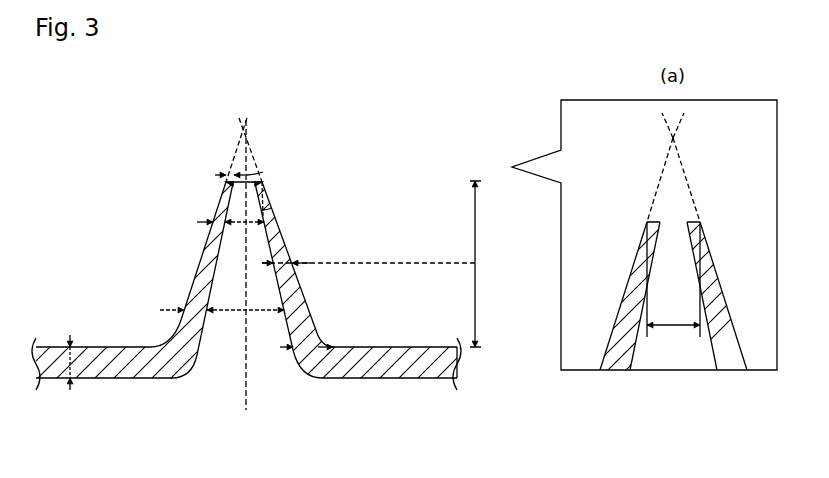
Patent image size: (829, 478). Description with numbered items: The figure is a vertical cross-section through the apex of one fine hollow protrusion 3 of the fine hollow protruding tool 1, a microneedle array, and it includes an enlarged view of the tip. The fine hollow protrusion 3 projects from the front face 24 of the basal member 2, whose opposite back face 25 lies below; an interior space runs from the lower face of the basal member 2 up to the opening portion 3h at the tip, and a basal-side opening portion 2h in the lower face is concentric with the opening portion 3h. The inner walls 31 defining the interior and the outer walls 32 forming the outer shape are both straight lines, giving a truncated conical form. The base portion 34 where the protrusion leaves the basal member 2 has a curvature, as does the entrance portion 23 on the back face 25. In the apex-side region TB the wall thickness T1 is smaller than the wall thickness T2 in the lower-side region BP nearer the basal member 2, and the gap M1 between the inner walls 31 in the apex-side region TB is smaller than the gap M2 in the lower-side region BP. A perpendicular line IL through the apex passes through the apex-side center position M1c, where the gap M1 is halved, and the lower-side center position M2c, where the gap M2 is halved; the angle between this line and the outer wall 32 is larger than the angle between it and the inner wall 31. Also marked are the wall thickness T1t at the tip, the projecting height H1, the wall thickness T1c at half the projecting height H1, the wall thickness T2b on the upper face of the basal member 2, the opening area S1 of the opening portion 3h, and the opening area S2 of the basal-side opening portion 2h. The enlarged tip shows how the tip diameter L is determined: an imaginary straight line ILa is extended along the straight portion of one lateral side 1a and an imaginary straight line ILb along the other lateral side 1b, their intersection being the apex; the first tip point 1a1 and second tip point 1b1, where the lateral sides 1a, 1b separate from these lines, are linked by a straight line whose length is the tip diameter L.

The fine hollow protruding tool 1 is at (373, 118).
The basal member 2 is at (50, 337).
The fine hollow protrusion 3 is at (189, 267).
The basal-side opening portion 2h is at (232, 358).
The opening portion 3h is at (250, 167).
The entrance portion 23 is at (176, 384).
The front face 24 is at (381, 346).
The back face 25 is at (385, 379).
The inner wall 31 is at (272, 266).
The outer wall 32 is at (299, 263).
The base portion 34 is at (148, 337).
The opening area S1 is at (241, 177).
The opening area S2 is at (273, 381).
The wall thickness T1 is at (216, 220).
The wall thickness at the tip T1t is at (221, 175).
The wall thickness T1c is at (299, 288).
The wall thickness T2 is at (69, 365).
The wall thickness T2b is at (312, 342).
The apex-side region TB is at (197, 222).
The lower-side region BP is at (170, 311).
The gap M1 is at (246, 224).
The apex-side center position M1c is at (268, 222).
The gap M2 is at (231, 311).
The lower-side center position M2c is at (280, 315).
The tip diameter L is at (237, 206).
The perpendicular line IL is at (247, 276).
The projecting height H1 is at (476, 256).
The lateral side 1a is at (723, 295).
The lateral side 1b is at (622, 298).
The first tip point 1a1 is at (700, 222).
The second tip point 1b1 is at (645, 222).
The imaginary straight line ILa is at (683, 155).
The imaginary straight line ILb is at (665, 155).